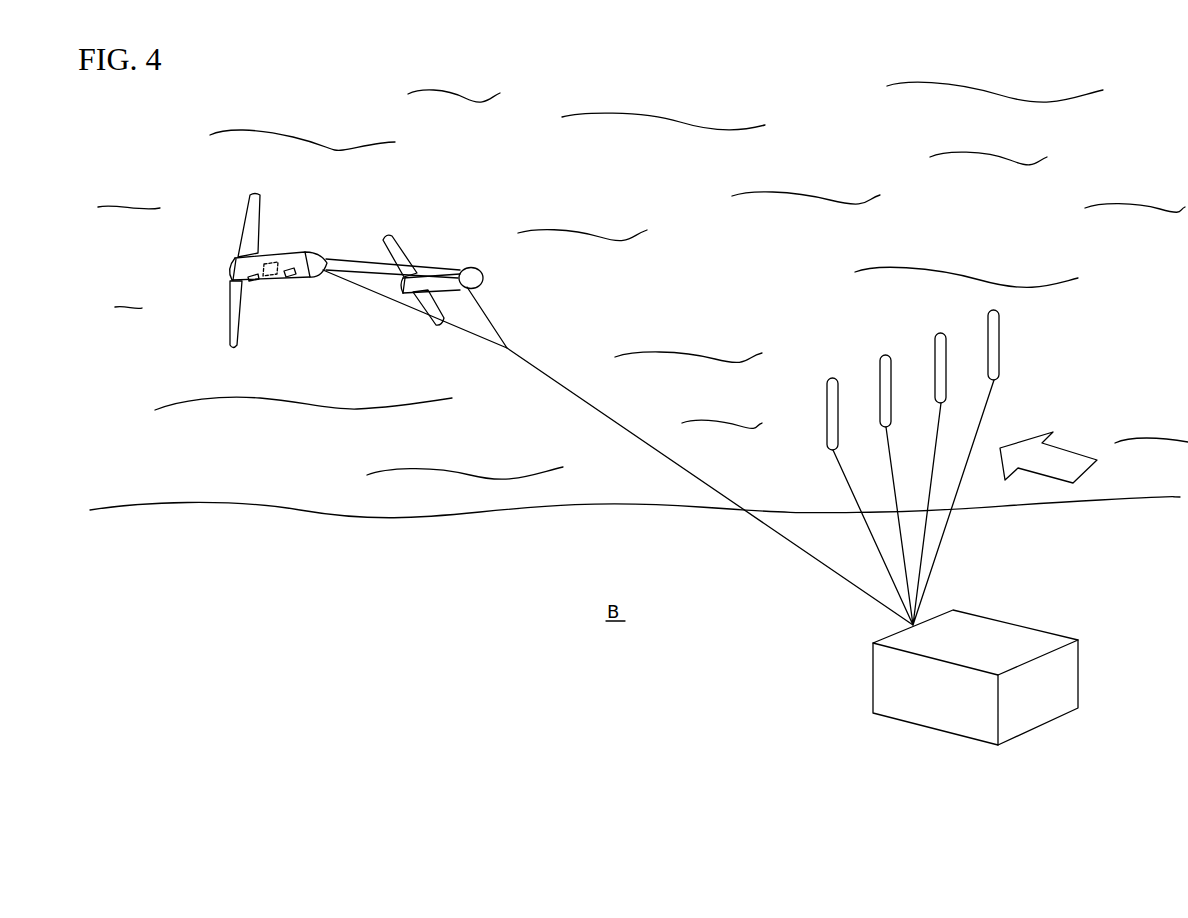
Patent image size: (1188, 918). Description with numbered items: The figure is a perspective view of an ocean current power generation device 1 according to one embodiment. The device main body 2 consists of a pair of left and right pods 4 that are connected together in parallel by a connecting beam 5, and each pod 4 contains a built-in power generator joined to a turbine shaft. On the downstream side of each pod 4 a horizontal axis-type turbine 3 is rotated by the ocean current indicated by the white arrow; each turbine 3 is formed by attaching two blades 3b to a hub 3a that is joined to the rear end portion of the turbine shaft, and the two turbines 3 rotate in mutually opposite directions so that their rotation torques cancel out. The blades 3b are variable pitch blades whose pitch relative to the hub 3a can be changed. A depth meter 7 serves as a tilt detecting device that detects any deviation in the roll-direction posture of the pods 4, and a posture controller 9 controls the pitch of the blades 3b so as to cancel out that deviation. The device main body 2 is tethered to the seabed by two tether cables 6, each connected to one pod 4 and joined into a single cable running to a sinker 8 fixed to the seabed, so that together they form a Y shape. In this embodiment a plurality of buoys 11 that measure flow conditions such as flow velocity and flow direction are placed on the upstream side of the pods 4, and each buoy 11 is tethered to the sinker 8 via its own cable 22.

The ocean current power generation device 1 is at (660, 302).
The device main body 2 is at (335, 257).
The horizontal axis-type turbine 3 is at (233, 260).
The hub 3a is at (228, 276).
The blade 3b is at (247, 217).
The pod 4 is at (282, 280).
The connecting beam 5 is at (360, 260).
The tether cable 6 is at (378, 303).
The depth meter 7 is at (290, 268).
The sinker 8 is at (913, 703).
The posture controller 9 is at (272, 262).
The buoy 11 is at (823, 395).
The cable 22 is at (975, 373).